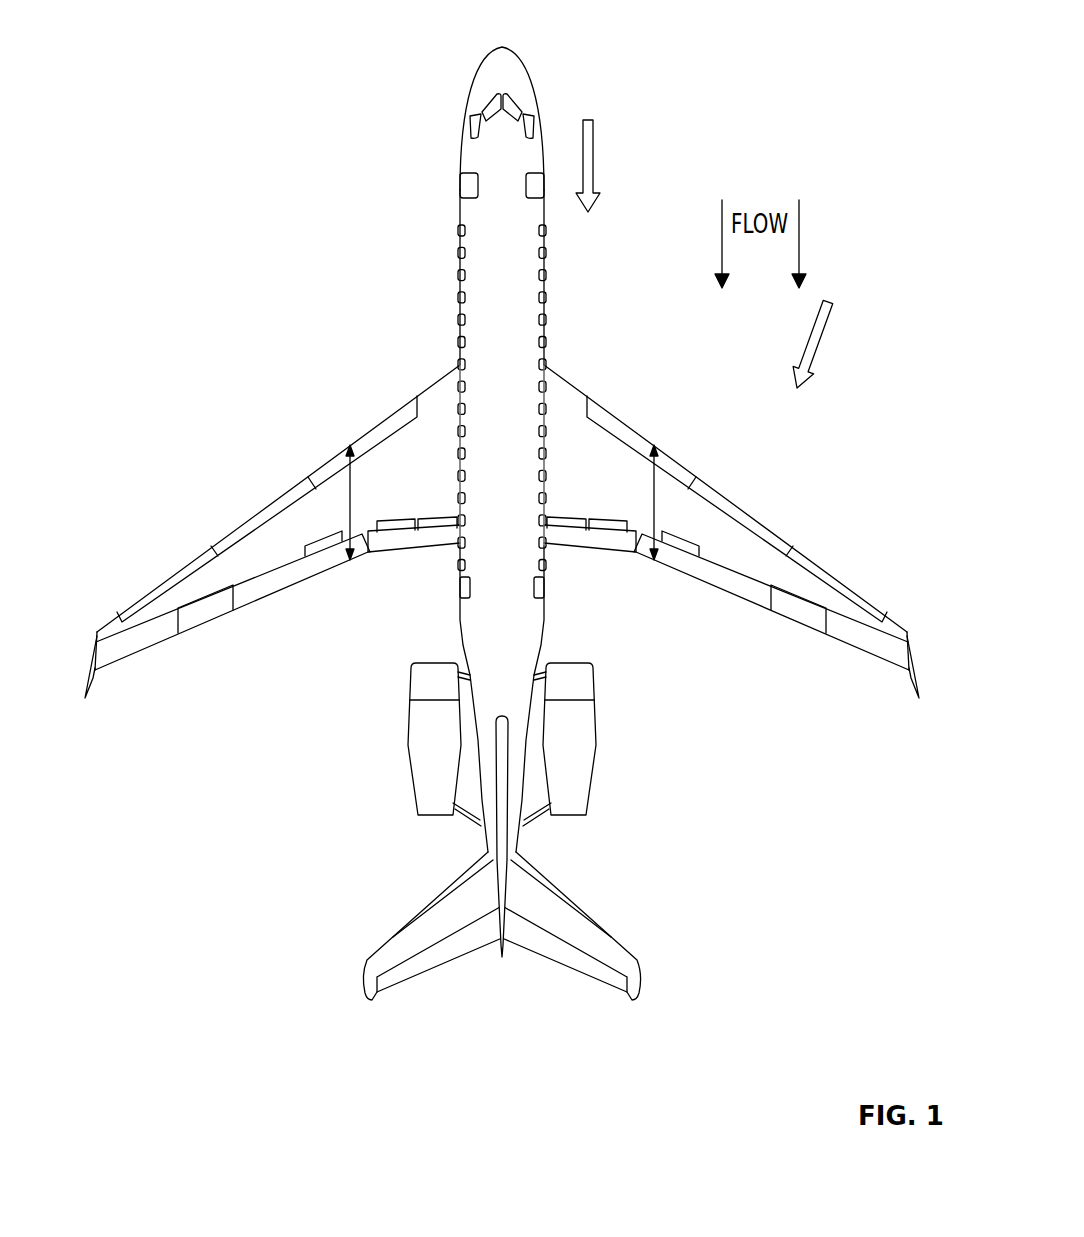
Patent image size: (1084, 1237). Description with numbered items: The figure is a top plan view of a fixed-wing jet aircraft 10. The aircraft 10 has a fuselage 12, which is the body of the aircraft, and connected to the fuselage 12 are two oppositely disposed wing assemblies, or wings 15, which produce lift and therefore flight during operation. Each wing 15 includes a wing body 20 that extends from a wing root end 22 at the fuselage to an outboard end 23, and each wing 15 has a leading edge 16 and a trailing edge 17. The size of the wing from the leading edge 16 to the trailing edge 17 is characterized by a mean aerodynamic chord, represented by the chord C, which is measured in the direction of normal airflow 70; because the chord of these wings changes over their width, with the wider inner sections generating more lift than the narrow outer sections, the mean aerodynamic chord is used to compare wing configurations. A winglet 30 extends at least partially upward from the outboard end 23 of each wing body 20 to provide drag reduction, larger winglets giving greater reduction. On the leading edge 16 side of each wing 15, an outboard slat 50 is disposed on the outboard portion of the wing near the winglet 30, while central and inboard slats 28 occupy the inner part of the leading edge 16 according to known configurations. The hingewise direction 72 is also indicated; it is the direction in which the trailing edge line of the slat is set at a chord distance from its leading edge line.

The fixed-wing jet aircraft 10 is at (713, 71).
The fuselage 12 is at (517, 296).
The wing assembly 15 is at (221, 410).
The leading edge 16 is at (110, 624).
The trailing edge 17 is at (150, 650).
The wing body 20 is at (436, 447).
The wing root end 22 is at (448, 491).
The outboard end 23 is at (101, 534).
The central and inboard slats 28 is at (364, 442).
The winglet 30 is at (100, 684).
The outboard slat 50 is at (200, 562).
The direction of normal airflow 70 is at (591, 148).
The hingewise direction 72 is at (830, 312).
The chord C is at (350, 515).